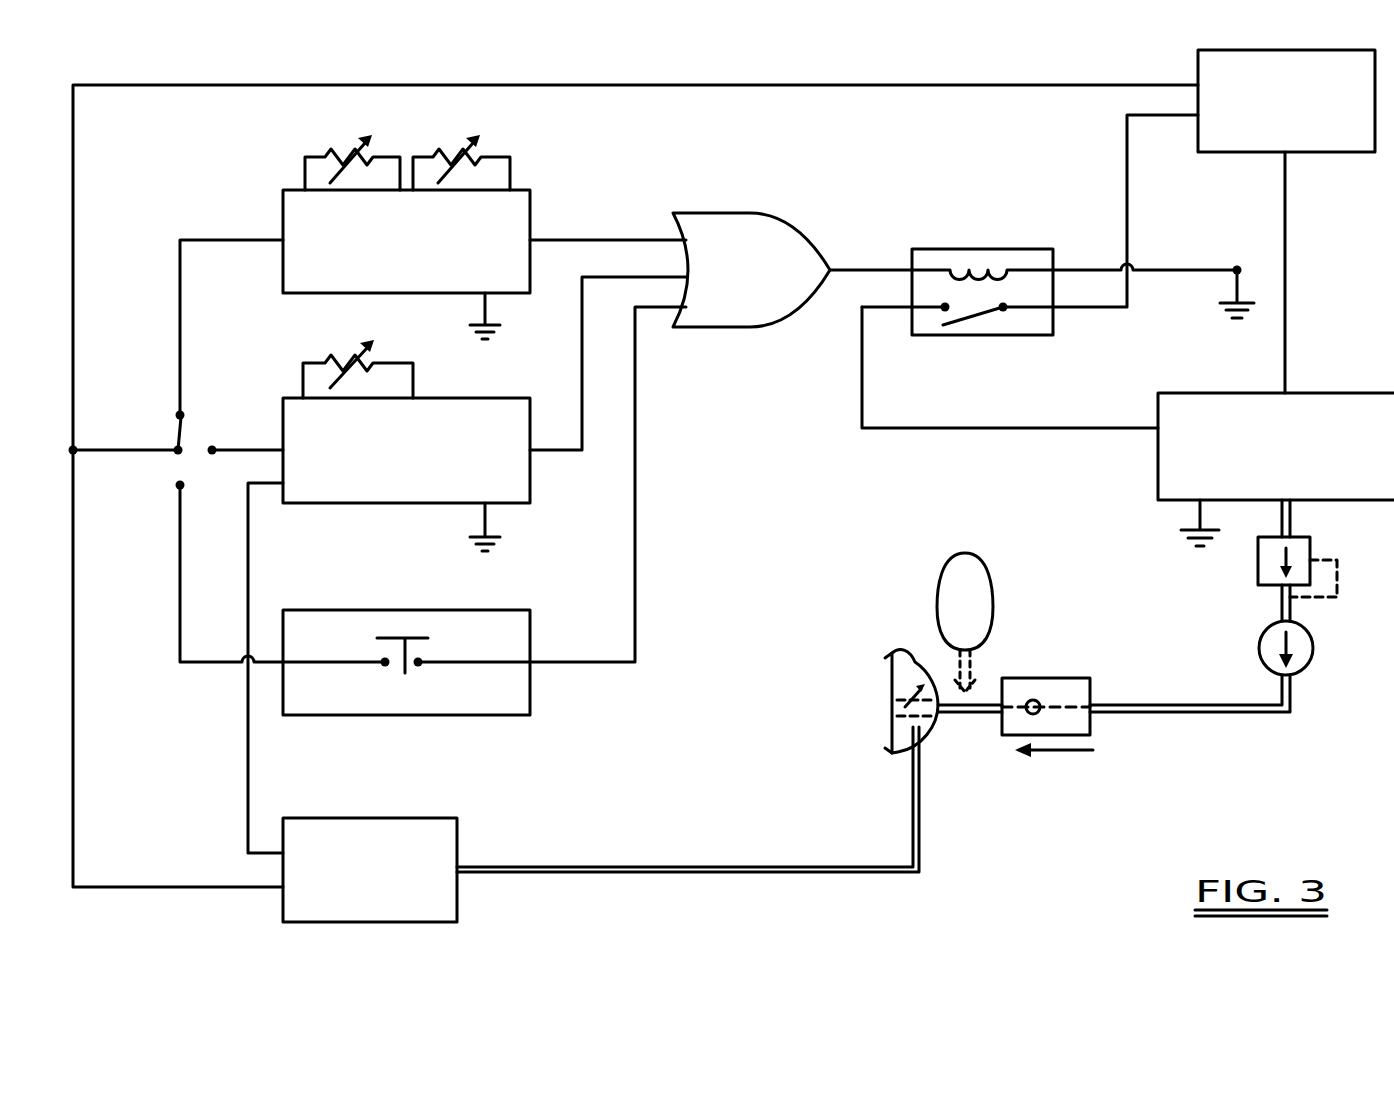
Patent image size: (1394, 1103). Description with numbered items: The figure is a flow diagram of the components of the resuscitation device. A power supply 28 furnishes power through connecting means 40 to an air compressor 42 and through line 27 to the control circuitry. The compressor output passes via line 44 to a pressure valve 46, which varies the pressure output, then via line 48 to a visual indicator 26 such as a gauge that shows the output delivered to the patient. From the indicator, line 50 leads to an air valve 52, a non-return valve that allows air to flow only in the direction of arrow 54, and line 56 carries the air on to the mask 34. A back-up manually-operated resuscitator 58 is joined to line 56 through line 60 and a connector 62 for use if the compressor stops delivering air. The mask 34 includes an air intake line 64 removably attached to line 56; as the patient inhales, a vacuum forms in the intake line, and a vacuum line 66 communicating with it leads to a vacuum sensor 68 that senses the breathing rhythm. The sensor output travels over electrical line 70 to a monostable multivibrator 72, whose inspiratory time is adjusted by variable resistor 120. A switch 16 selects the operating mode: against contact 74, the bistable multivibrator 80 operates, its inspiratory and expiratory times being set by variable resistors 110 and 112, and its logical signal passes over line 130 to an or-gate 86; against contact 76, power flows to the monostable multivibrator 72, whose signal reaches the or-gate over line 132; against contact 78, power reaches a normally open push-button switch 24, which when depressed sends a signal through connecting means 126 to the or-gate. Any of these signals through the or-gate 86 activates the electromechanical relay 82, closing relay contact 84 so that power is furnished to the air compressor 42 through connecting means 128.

The switch 16 is at (176, 438).
The push-button switch 24 is at (422, 634).
The visual indicator 26 is at (1310, 652).
The line 27 is at (542, 85).
The power supply 28 is at (1198, 63).
The mask 34 is at (893, 669).
The connecting means 40 is at (1285, 218).
The air compressor 42 is at (1338, 393).
The line 44 is at (1292, 524).
The pressure valve 46 is at (1300, 565).
The line 48 is at (1292, 618).
The line 50 is at (1190, 713).
The air valve 52 is at (1036, 700).
The arrow 54 is at (1040, 752).
The line 56 is at (960, 715).
The manually-operated resuscitator 58 is at (975, 584).
The line 60 is at (958, 672).
The connector 62 is at (972, 688).
The air intake line 64 is at (892, 718).
The vacuum line 66 is at (922, 837).
The vacuum sensor 68 is at (458, 854).
The electrical line 70 is at (250, 602).
The monostable multivibrator 72 is at (471, 398).
The contact 74 is at (178, 414).
The contact 76 is at (214, 450).
The contact 78 is at (180, 485).
The bistable multivibrator 80 is at (512, 220).
The electromechanical relay 82 is at (976, 268).
The relay contact 84 is at (984, 318).
The or-gate 86 is at (774, 228).
The variable resistor 110 is at (356, 144).
The variable resistor 112 is at (466, 144).
The variable resistor 120 is at (338, 358).
The connecting means 126 is at (636, 432).
The connecting means 128 is at (1000, 430).
The line 130 is at (573, 240).
The line 132 is at (570, 356).